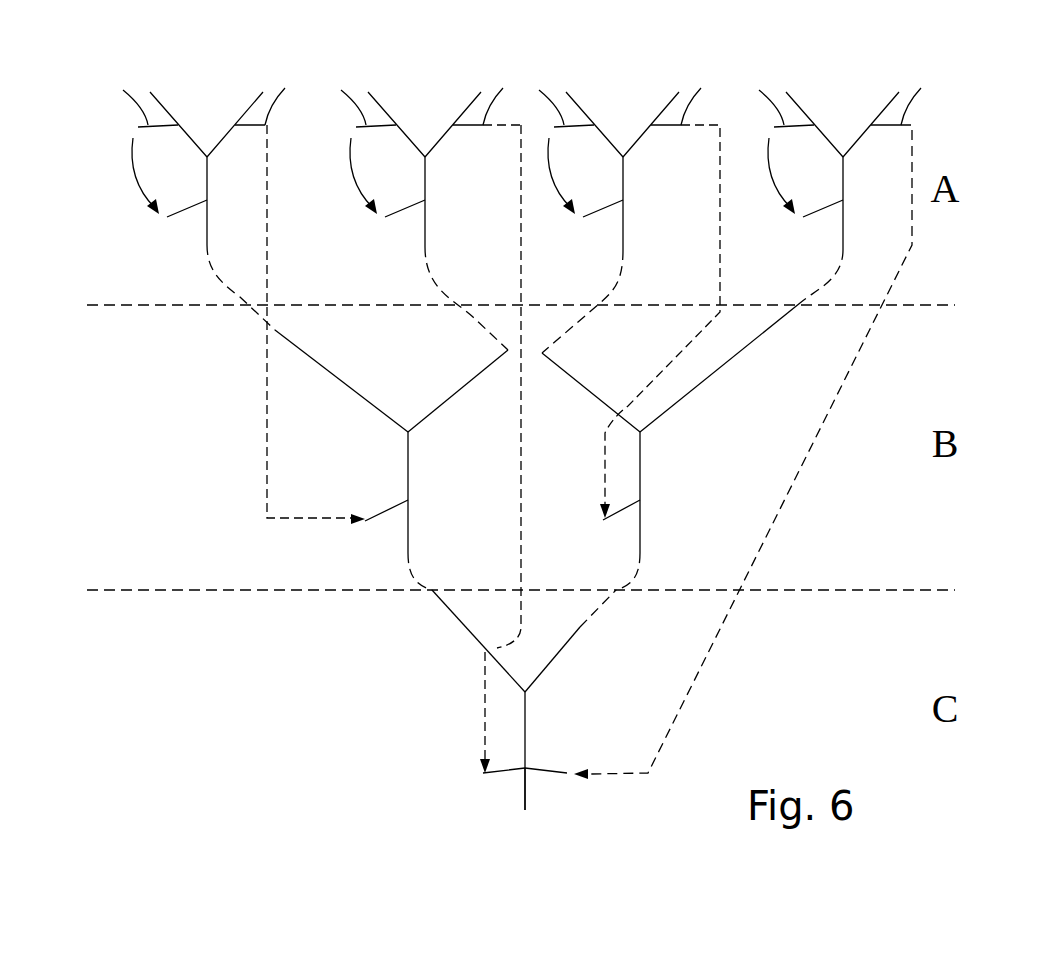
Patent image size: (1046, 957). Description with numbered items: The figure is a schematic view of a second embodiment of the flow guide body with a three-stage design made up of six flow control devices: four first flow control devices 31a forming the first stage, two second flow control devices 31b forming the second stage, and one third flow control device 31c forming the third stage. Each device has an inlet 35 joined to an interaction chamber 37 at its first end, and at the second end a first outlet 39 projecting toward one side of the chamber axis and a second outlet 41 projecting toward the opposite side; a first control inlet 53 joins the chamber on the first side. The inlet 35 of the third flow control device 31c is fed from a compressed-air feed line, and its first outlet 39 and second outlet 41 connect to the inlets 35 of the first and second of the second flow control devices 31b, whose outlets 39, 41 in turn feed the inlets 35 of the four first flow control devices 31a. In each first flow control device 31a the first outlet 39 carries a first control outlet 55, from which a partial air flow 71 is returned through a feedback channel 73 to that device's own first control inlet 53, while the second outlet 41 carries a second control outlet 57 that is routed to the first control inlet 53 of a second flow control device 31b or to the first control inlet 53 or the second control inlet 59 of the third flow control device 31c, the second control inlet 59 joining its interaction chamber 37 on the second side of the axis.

The first flow control device 31a is at (155, 255).
The second flow control device 31b is at (155, 438).
The third flow control device 31c is at (155, 708).
The inlet 35 is at (205, 245).
The interaction chamber 37 is at (208, 183).
The first outlet 39 is at (169, 105).
The second outlet 41 is at (254, 108).
The first control inlet 53 is at (183, 210).
The first control outlet 55 is at (461, 92).
The second control outlet 57 is at (588, 91).
The second control inlet 59 is at (552, 778).
The partial air flow 71 is at (475, 452).
The feedback channel 73 is at (140, 175).